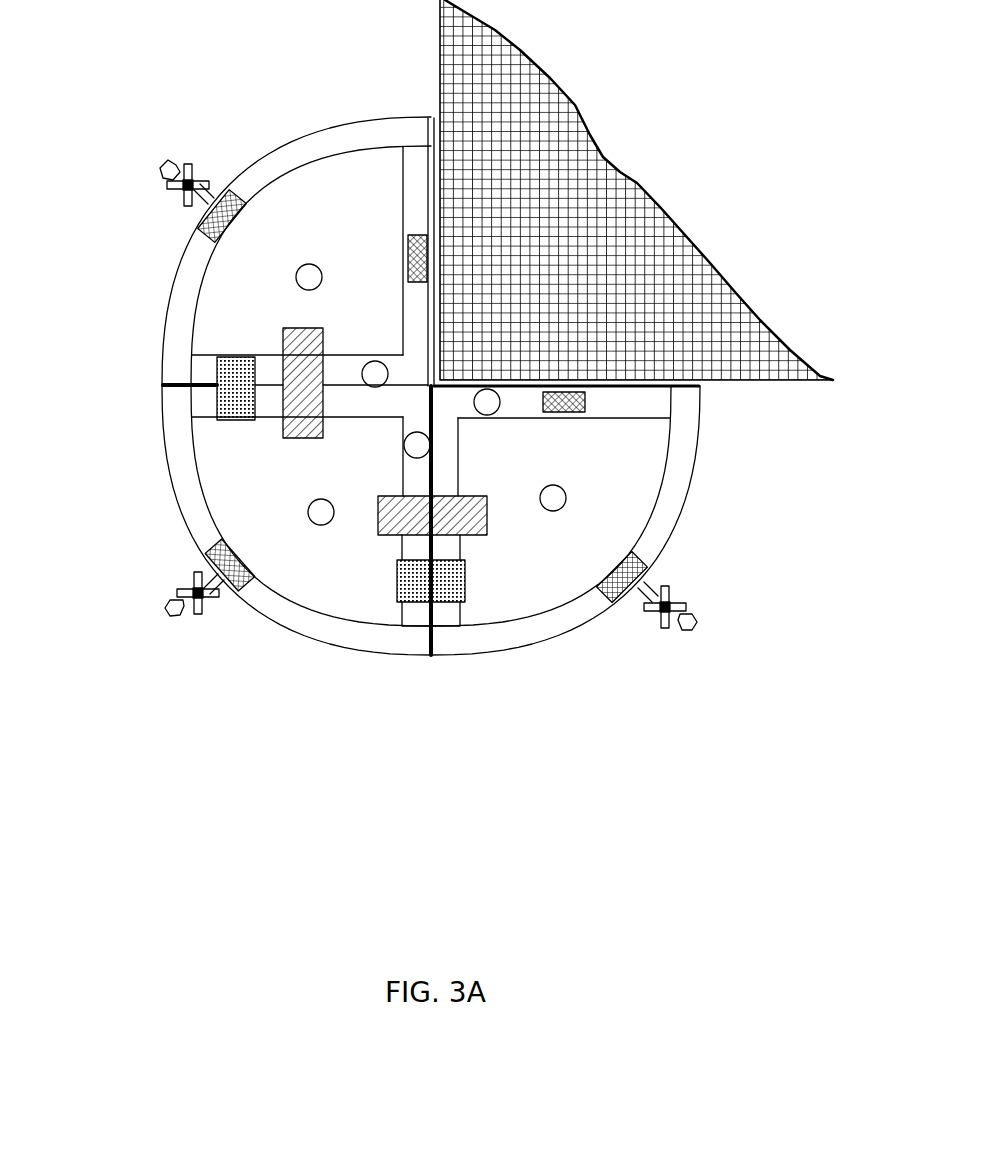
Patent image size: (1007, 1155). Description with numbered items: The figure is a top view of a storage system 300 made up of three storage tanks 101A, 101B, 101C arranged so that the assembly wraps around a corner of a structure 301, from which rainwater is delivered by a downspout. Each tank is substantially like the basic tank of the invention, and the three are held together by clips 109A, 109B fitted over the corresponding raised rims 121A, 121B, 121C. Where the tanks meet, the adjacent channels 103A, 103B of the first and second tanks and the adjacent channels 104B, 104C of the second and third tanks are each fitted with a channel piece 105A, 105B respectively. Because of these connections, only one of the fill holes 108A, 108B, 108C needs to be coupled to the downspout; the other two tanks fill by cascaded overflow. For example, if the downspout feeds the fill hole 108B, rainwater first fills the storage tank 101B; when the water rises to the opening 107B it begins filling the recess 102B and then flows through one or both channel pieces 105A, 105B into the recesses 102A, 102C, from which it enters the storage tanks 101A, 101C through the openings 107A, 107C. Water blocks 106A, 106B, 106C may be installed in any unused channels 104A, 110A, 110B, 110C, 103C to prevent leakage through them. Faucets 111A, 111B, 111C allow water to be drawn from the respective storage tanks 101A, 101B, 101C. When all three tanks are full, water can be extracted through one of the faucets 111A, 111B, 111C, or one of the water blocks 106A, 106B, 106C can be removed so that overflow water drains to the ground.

The storage system 300 is at (205, 763).
The structure 301 is at (655, 198).
The storage tank 101A is at (232, 177).
The storage tank 101B is at (368, 660).
The storage tank 101C is at (567, 640).
The recess 102A is at (303, 198).
The recess 102B is at (297, 575).
The recess 102C is at (633, 465).
The channel 103A is at (205, 342).
The channel 103B is at (270, 417).
The channel 103C is at (585, 391).
The channel 104A is at (427, 125).
The channel 104B is at (413, 543).
The channel 104C is at (455, 548).
The channel piece 105A is at (297, 348).
The channel piece 105B is at (382, 533).
The water block 106A is at (407, 233).
The water block 106B is at (212, 557).
The water block 106C is at (585, 400).
The opening 107A is at (294, 276).
The opening 107B is at (308, 512).
The opening 107C is at (568, 497).
The fill hole 108A is at (370, 363).
The fill hole 108B is at (404, 446).
The fill hole 108C is at (500, 403).
The clip 109A is at (163, 385).
The clip 109B is at (437, 583).
The channel 110A is at (215, 170).
The channel 110B is at (207, 577).
The channel 110C is at (640, 575).
The faucet 111A is at (170, 180).
The faucet 111B is at (182, 615).
The faucet 111C is at (687, 602).
The raised rim 121A is at (164, 328).
The raised rim 121B is at (160, 410).
The raised rim 121C is at (682, 523).